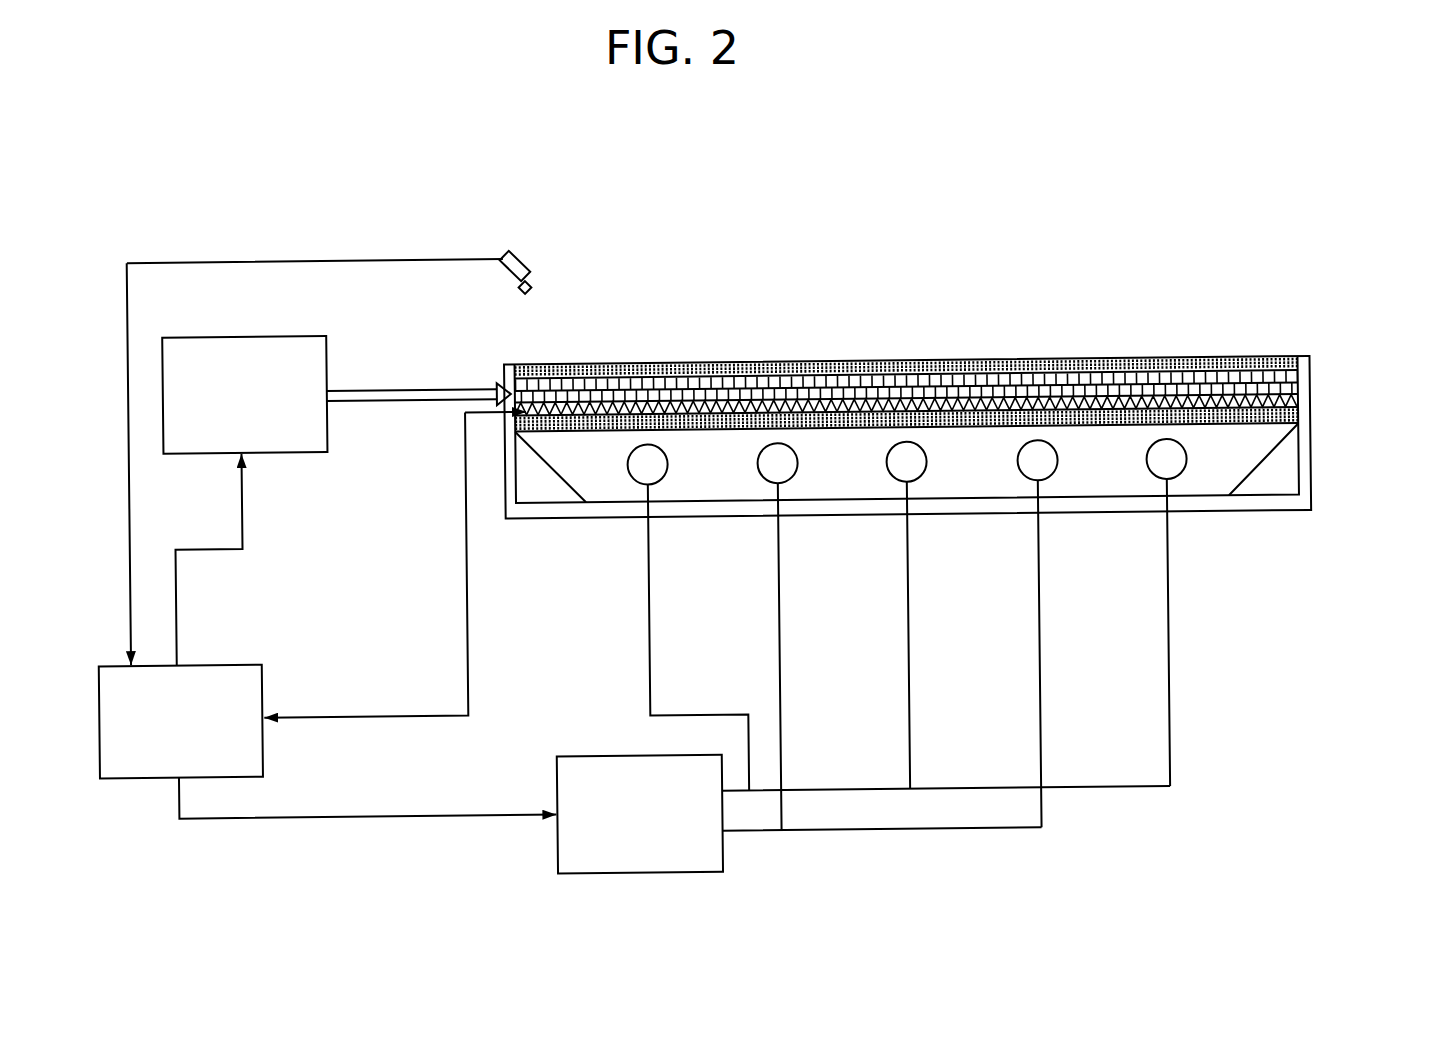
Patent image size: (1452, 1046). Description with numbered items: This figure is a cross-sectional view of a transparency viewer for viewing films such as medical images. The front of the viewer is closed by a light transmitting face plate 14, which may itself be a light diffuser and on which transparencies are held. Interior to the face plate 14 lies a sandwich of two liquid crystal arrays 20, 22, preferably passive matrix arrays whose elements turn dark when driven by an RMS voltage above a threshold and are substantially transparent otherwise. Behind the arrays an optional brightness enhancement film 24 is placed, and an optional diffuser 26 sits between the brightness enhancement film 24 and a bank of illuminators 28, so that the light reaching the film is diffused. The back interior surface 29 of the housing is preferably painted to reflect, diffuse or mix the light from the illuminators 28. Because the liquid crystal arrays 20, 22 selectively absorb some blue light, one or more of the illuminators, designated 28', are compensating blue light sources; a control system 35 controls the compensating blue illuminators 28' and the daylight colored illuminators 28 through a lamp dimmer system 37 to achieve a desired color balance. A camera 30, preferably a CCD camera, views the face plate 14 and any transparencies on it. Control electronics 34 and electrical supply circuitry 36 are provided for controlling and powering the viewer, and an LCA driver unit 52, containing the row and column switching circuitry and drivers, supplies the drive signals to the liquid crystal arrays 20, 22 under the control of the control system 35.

The face plate 14 is at (1308, 365).
The liquid crystal array 22 is at (1298, 386).
The liquid crystal array 20 is at (1298, 396).
The brightness enhancement film 24 is at (1298, 412).
The diffuser 26 is at (1299, 426).
The back interior surface 29 is at (1247, 484).
The illuminators 28 is at (887, 616).
The compensating blue illuminators 28' is at (885, 635).
The camera 30 is at (516, 253).
The control electronics 34 is at (333, 241).
The control system 35 is at (223, 661).
The electrical supply circuitry 36 is at (736, 862).
The lamp dimmer system 37 is at (553, 850).
The LCA driver unit 52 is at (289, 334).